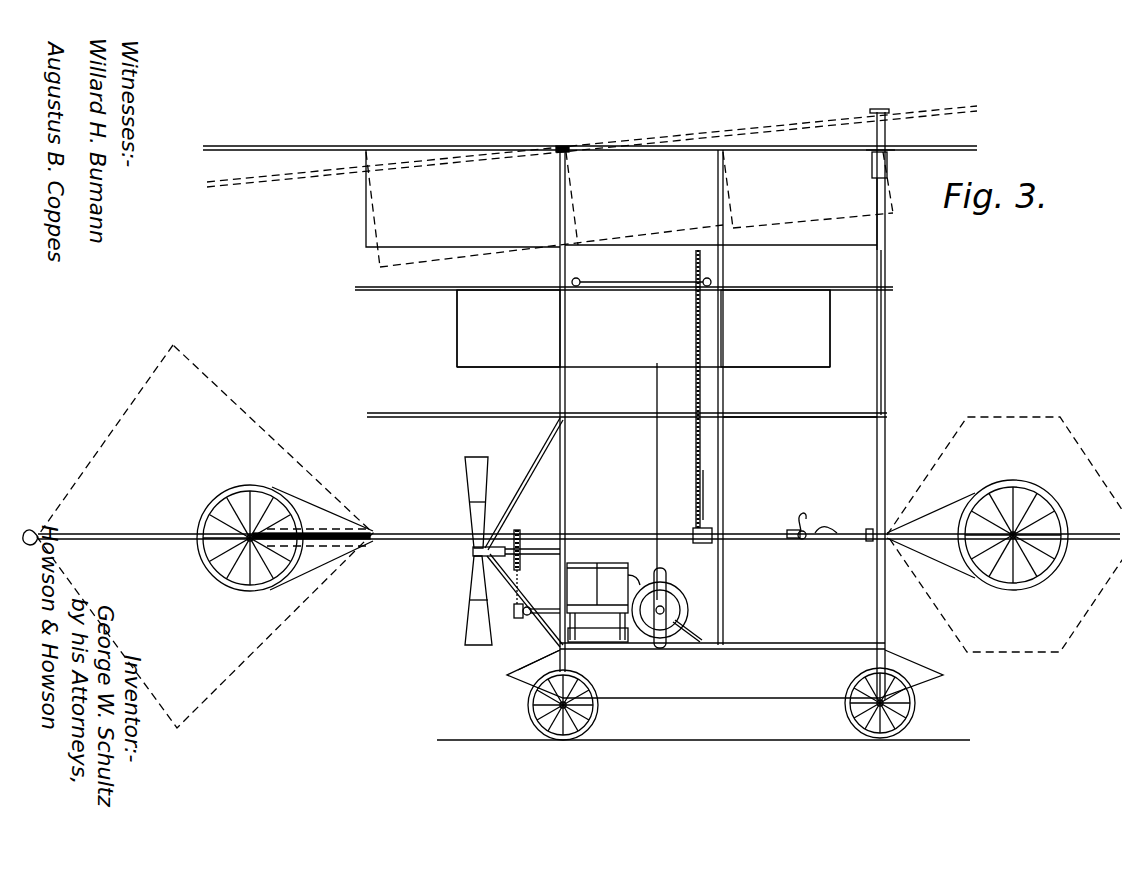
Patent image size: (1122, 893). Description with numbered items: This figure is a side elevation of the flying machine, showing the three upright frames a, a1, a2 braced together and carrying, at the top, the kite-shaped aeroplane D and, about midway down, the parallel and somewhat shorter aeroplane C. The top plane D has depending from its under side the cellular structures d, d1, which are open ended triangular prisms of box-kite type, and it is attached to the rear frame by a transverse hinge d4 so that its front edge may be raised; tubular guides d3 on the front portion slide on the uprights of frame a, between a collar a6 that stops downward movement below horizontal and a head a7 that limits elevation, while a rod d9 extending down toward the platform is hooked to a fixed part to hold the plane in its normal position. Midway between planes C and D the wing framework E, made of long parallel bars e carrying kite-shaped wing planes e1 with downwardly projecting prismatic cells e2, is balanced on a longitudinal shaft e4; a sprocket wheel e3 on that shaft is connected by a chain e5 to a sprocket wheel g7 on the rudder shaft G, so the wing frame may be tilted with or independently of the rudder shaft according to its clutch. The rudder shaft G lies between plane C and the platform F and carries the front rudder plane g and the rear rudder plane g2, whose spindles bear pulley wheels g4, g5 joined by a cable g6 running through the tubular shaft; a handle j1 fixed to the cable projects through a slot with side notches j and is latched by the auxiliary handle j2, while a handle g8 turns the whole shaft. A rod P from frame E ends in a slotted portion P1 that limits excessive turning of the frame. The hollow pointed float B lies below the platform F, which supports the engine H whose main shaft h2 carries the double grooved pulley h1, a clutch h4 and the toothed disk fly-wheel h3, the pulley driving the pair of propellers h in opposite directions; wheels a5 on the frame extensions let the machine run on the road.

The top aeroplane D is at (495, 146).
The cellular structure d is at (463, 198).
The cellular structure d1 is at (721, 214).
The tubular guide d3 is at (888, 165).
The hinge d4 is at (556, 156).
The rod d9 is at (887, 325).
The upright frame a is at (882, 388).
The upright frame a1 is at (724, 404).
The upright frame a2 is at (566, 406).
The wheel a5 is at (600, 715).
The collar a6 is at (870, 183).
The head a7 is at (881, 110).
The framework E is at (643, 327).
The parallel bar e is at (643, 270).
The kite-shaped plane e1 is at (512, 287).
The prismatic cellular structure e2 is at (643, 328).
The sprocket wheel e3 is at (694, 283).
The shaft e4 is at (660, 286).
The chain e5 is at (694, 468).
The aeroplane C is at (639, 432).
The rod P is at (652, 470).
The loop or slotted portion P1 is at (682, 600).
The rudder shaft G is at (610, 533).
The rudder plane g is at (1094, 540).
The rudder plane g2 is at (168, 538).
The pulley wheel g4 is at (1066, 518).
The pulley wheel g5 is at (260, 486).
The cable g6 is at (330, 505).
The sprocket wheel g7 is at (698, 543).
The operating handle g8 is at (870, 543).
The notch j is at (780, 533).
The operating handle j1 is at (804, 526).
The auxiliary handle j2 is at (800, 512).
The propeller h is at (484, 491).
The double grooved pulley h1 is at (516, 617).
The main shaft h2 is at (549, 610).
The disk fly-wheel h3 is at (636, 576).
The clutch h4 is at (548, 635).
The engine H is at (597, 602).
The platform F is at (808, 643).
The hollow pointed cylinder B is at (725, 674).